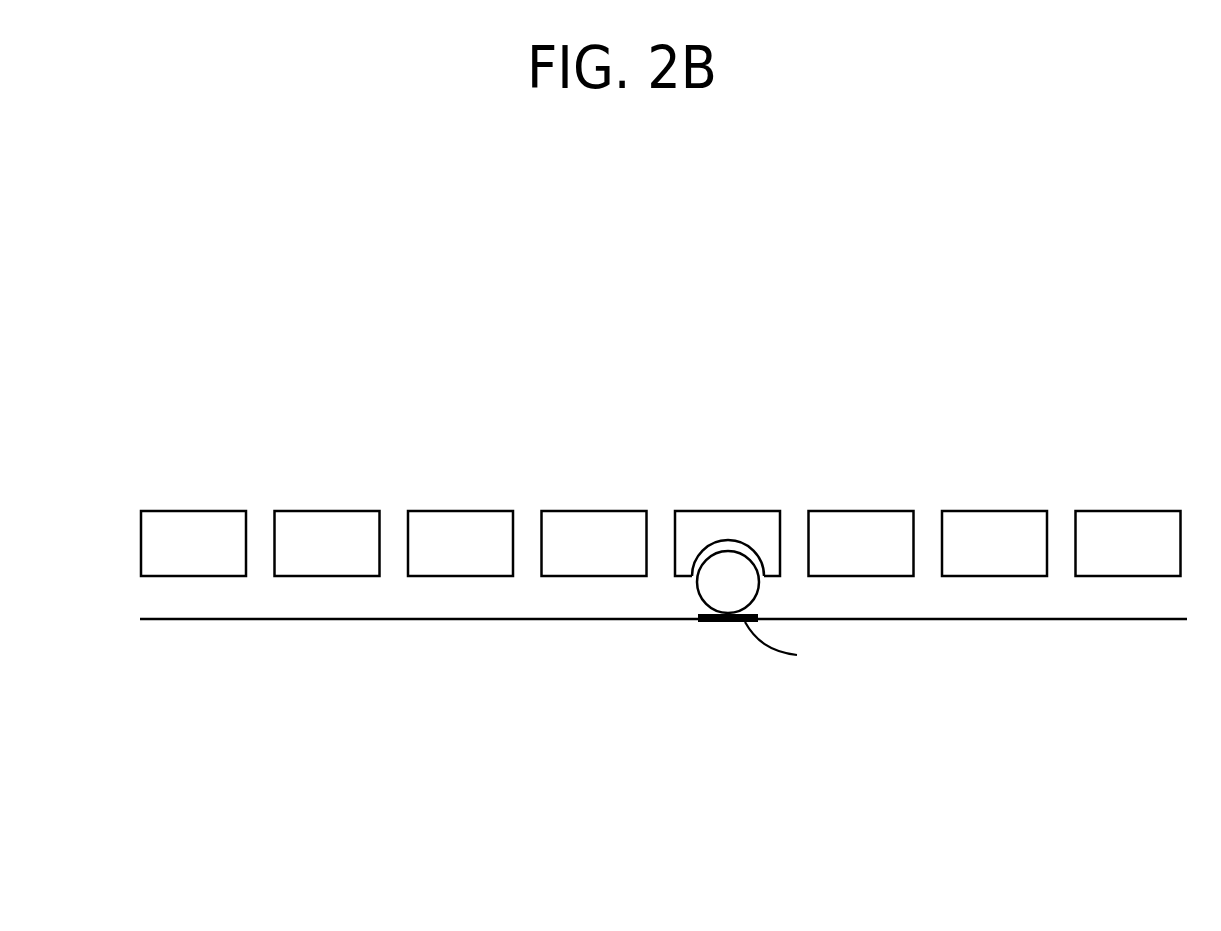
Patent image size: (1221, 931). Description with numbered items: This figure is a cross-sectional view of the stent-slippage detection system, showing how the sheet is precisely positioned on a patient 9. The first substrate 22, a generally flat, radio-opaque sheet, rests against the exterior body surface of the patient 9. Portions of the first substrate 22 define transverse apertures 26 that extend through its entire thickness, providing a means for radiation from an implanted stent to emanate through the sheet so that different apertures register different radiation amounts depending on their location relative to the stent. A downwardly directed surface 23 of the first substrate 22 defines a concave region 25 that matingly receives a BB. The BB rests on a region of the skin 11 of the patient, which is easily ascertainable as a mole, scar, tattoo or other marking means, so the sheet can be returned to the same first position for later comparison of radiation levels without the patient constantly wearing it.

The patient 9 is at (560, 722).
The region of the skin 11 is at (427, 618).
The first substrate 22 is at (1105, 540).
The downwardly directed surface 23 is at (178, 575).
The concave region 25 is at (720, 550).
The transverse apertures 26 is at (392, 518).